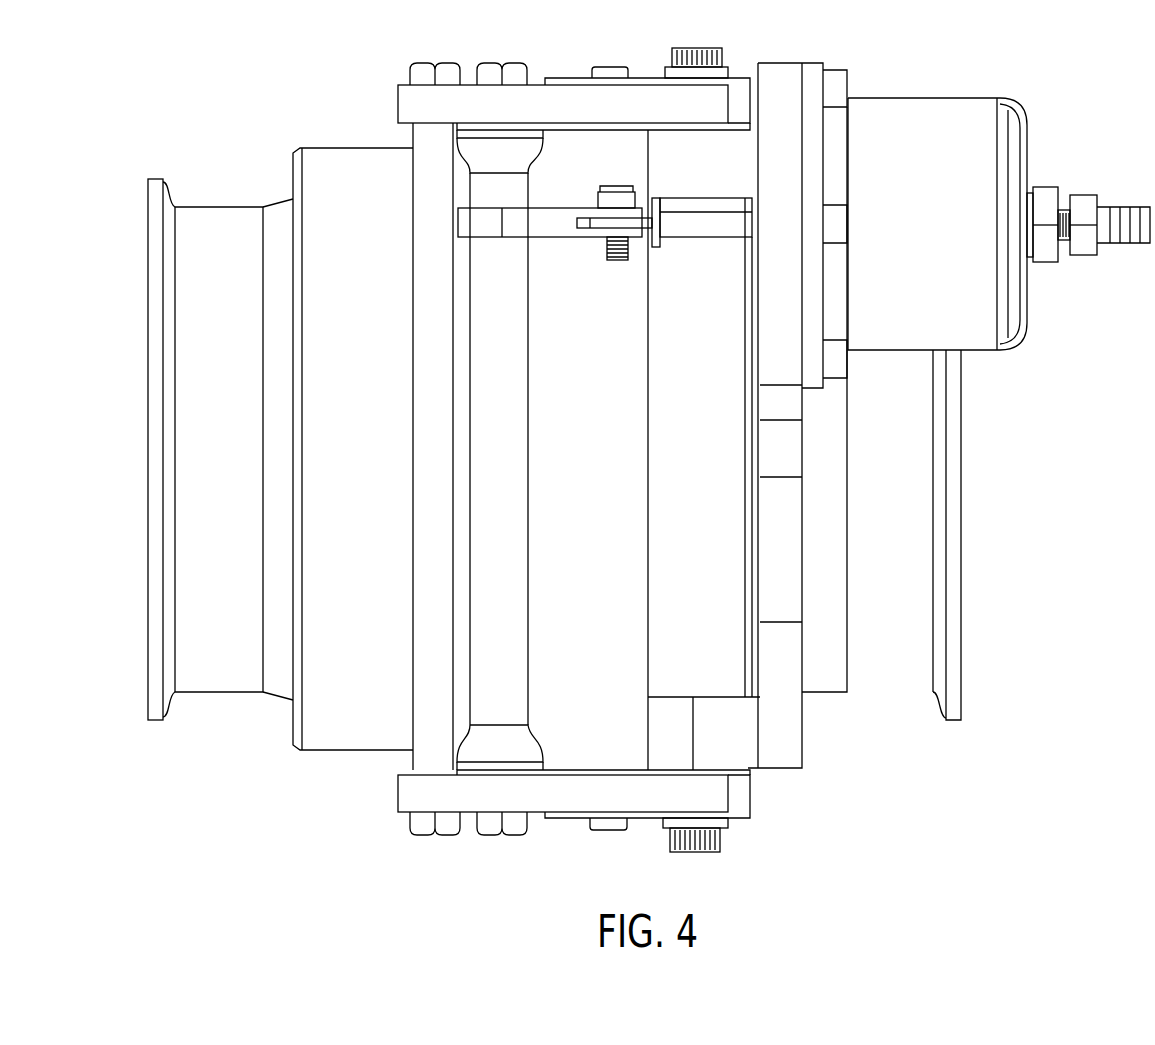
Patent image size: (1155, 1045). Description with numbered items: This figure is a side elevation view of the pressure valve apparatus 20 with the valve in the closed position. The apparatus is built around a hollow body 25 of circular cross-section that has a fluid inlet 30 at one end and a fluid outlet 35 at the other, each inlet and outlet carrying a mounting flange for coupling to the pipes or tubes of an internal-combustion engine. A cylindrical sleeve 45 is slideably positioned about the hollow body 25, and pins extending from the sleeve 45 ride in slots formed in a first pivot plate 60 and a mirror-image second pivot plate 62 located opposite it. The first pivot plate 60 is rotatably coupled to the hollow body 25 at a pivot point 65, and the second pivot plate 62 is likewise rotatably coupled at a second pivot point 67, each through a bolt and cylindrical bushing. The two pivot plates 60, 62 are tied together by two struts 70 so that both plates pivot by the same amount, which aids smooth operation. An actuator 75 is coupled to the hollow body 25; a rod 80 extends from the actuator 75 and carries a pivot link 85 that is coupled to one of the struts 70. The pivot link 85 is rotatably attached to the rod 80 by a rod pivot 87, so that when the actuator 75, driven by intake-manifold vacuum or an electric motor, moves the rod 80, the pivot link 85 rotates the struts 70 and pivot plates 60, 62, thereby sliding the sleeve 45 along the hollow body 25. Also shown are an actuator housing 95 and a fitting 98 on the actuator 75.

The pressure valve apparatus 20 is at (872, 745).
The hollow body 25 is at (361, 417).
The fluid inlet 30 is at (115, 493).
The fluid outlet 35 is at (1000, 444).
The sleeve 45 is at (601, 465).
The pivot plate 60 is at (567, 98).
The second pivot plate 62 is at (570, 795).
The pivot point 65 is at (723, 58).
The second pivot point 67 is at (723, 842).
The strut 70 is at (443, 577).
The actuator 75 is at (1050, 100).
The rod 80 is at (702, 226).
The pivot link 85 is at (568, 226).
The rod pivot 87 is at (614, 192).
The motor 95 is at (931, 227).
The hose barb 98 is at (1125, 246).